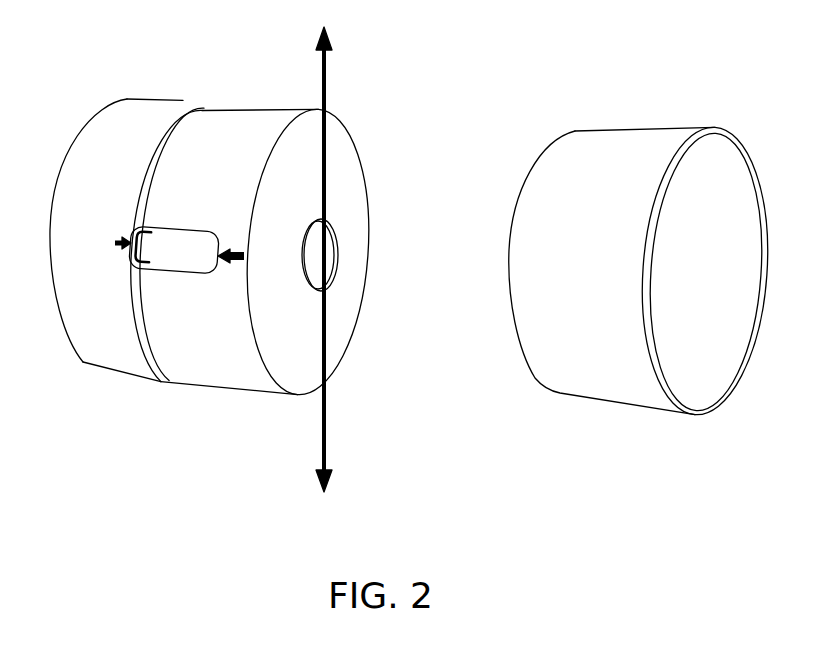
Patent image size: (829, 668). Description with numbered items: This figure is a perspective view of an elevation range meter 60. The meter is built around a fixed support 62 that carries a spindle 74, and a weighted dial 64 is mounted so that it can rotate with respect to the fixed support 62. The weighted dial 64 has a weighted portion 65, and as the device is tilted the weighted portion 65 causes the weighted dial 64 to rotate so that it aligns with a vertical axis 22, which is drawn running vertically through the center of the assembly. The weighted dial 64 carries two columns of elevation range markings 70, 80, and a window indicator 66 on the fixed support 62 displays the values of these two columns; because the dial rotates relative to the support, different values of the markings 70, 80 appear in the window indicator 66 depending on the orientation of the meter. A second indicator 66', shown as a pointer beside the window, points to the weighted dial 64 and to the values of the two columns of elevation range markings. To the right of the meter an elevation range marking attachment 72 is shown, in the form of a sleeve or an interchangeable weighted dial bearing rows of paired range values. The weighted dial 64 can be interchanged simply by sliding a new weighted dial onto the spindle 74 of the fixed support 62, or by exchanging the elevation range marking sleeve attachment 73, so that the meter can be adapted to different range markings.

The vertical axis 22 is at (325, 97).
The elevation range meter 60 is at (265, 293).
The fixed support 62 is at (345, 297).
The weighted dial 64 is at (137, 255).
The weighted portion 65 is at (263, 393).
The window indicator 66 is at (166, 337).
The second indicator 66' is at (203, 337).
The first column of elevation range markings 70 is at (162, 226).
The elevation range marking attachment 72 is at (600, 138).
The elevation range marking sleeve attachment 73 is at (643, 234).
The spindle 74 is at (338, 252).
The second column of elevation range markings 80 is at (203, 228).